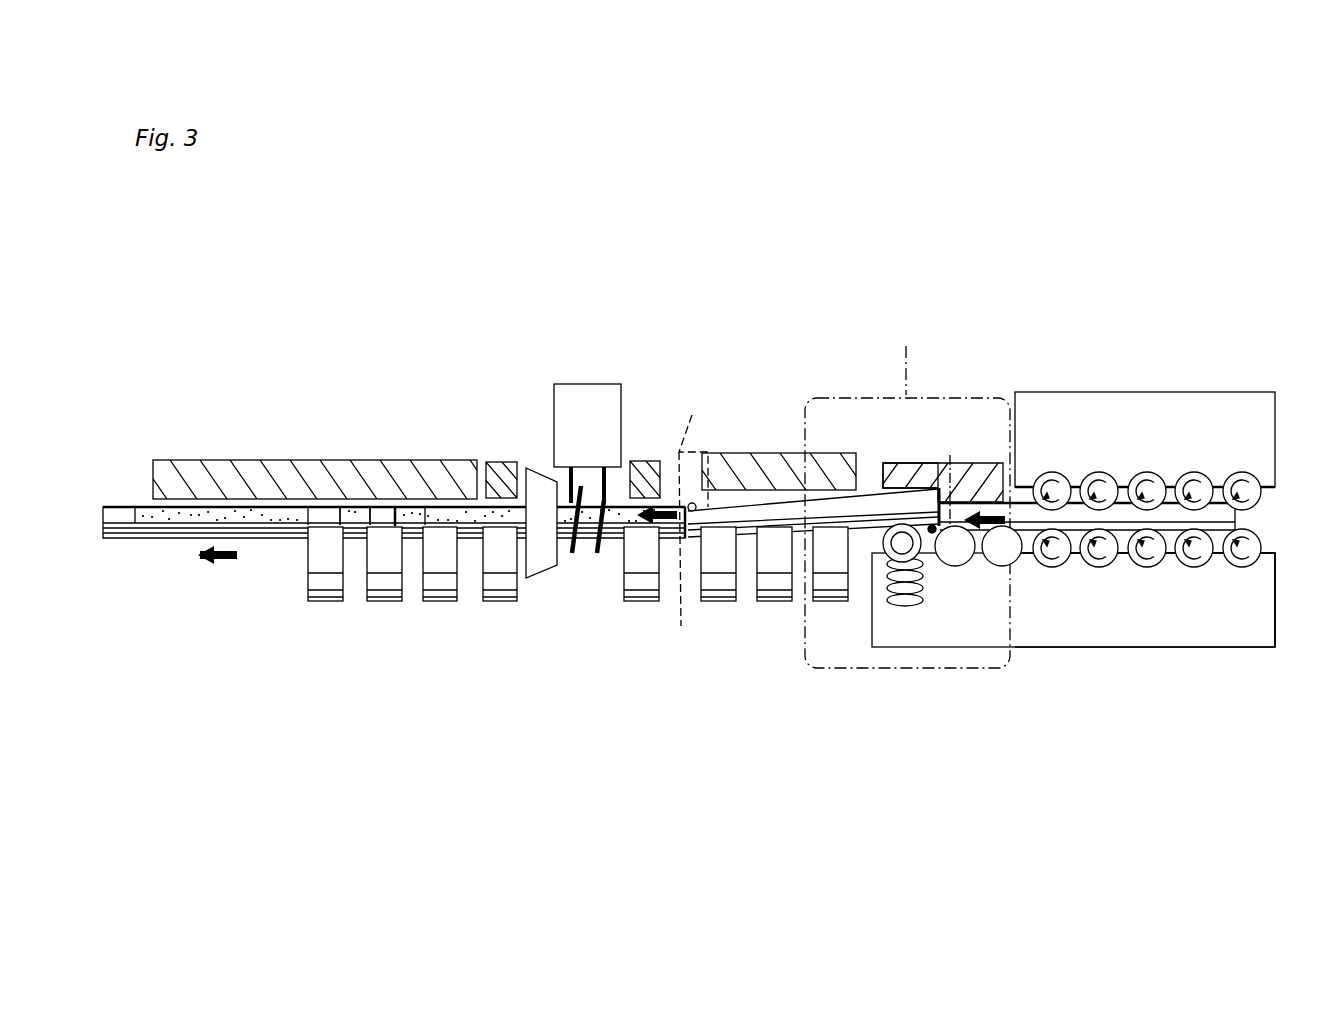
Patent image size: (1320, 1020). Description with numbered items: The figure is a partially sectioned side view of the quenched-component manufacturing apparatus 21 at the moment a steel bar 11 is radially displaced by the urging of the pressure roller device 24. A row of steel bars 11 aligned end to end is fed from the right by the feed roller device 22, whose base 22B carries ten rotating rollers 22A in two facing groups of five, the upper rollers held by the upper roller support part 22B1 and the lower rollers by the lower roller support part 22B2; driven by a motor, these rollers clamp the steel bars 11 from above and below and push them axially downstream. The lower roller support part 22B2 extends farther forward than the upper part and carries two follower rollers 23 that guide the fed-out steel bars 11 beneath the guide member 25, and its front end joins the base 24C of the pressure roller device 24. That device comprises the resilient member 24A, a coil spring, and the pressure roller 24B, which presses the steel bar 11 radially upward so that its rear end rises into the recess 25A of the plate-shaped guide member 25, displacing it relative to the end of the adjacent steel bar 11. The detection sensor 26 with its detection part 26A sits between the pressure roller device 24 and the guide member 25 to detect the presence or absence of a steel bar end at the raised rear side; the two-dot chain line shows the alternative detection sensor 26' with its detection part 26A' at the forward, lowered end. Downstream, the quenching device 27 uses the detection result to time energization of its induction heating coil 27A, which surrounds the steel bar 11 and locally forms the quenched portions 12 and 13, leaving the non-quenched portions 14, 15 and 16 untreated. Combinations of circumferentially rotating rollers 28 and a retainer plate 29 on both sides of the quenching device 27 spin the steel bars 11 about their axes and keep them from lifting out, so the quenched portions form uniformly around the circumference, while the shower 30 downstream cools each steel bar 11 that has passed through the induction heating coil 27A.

The steel bar 11 is at (125, 530).
The quenched portion 12 is at (226, 515).
The quenched portion 13 is at (360, 507).
The non-quenched portion 14 is at (122, 513).
The non-quenched portion 15 is at (328, 513).
The non-quenched portion 16 is at (384, 513).
The manufacturing apparatus 21 is at (514, 379).
The feed roller device 22 is at (1056, 532).
The rotating roller 22A is at (1053, 470).
The base 22B is at (1215, 632).
The upper roller support part 22B1 is at (1217, 408).
The lower roller support part 22B2 is at (1115, 637).
The follower roller 23 is at (958, 563).
The pressure roller device 24 is at (1045, 632).
The resilient member 24A is at (888, 572).
The pressure roller 24B is at (890, 557).
The base 24C is at (908, 637).
The guide member 25 is at (985, 478).
The recess 25A is at (904, 496).
The detection sensor 26 is at (923, 478).
The detection part 26A is at (961, 475).
The detection sensor 26' is at (697, 447).
The detection part 26A' is at (693, 551).
The quenching device 27 is at (591, 397).
The induction heating coil 27A is at (592, 547).
The circumferentially rotating roller 28 is at (326, 581).
The retainer plate 29 is at (263, 475).
The shower 30 is at (541, 562).